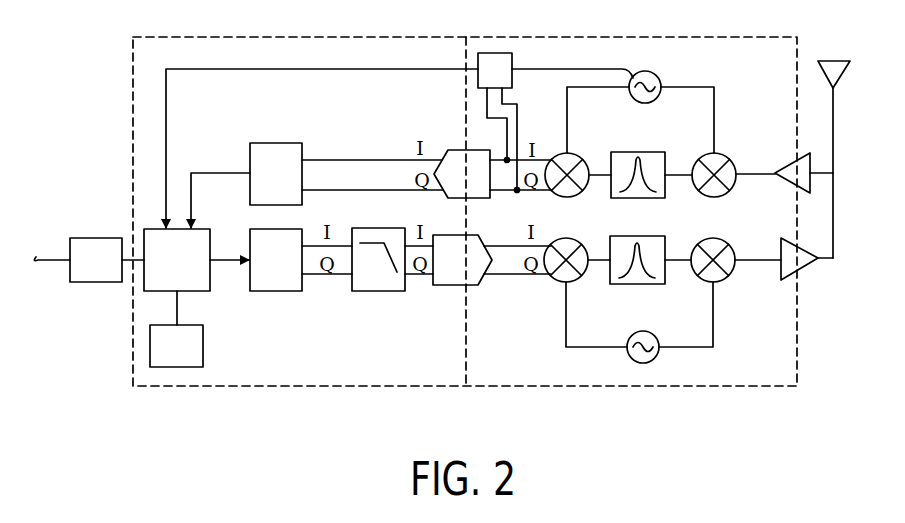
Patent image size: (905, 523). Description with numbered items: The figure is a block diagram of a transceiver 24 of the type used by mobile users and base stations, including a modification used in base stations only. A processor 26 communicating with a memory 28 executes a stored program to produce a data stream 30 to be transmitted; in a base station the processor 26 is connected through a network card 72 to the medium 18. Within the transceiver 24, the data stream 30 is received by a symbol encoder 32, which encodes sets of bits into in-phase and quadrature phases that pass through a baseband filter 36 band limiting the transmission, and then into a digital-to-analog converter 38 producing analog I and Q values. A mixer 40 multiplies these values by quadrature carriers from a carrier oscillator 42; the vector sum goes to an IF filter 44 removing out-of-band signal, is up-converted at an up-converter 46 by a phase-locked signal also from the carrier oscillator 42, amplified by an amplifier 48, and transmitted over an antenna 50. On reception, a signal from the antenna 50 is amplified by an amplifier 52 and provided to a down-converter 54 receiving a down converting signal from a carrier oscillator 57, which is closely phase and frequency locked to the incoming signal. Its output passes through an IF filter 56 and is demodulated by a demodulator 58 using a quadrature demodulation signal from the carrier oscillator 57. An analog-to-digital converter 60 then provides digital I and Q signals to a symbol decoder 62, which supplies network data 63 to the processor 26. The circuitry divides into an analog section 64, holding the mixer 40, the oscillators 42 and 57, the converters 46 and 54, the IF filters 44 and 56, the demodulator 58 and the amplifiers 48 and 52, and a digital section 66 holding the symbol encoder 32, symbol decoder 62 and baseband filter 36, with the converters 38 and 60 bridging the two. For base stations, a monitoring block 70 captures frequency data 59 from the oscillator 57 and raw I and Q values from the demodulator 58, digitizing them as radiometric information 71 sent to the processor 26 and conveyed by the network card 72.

The medium 18 is at (52, 262).
The transceiver 24 is at (180, 416).
The processor 26 is at (177, 260).
The memory 28 is at (176, 329).
The data stream 30 is at (222, 262).
The symbol encoder 32 is at (301, 260).
The baseband filter 36 is at (377, 278).
The digital-to-analog converter 38 is at (492, 260).
The mixer 40 is at (577, 240).
The carrier oscillator 42 is at (655, 360).
The IF filter 44 is at (639, 285).
The up-converter 46 is at (724, 240).
The amplifier 48 is at (781, 250).
The antenna 50 is at (838, 222).
The amplifier 52 is at (779, 166).
The down-converter 54 is at (727, 153).
The IF filter 56 is at (640, 150).
The carrier oscillator 57 is at (657, 75).
The demodulator 58 is at (578, 152).
The frequency data 59 is at (607, 69).
The analog-to-digital converter 60 is at (492, 174).
The symbol decoder 62 is at (346, 174).
The network data 63 is at (220, 173).
The analog section 64 is at (478, 372).
The digital section 66 is at (452, 372).
The monitoring block 70 is at (497, 53).
The radiometric information 71 is at (305, 72).
The network card 72 is at (96, 238).